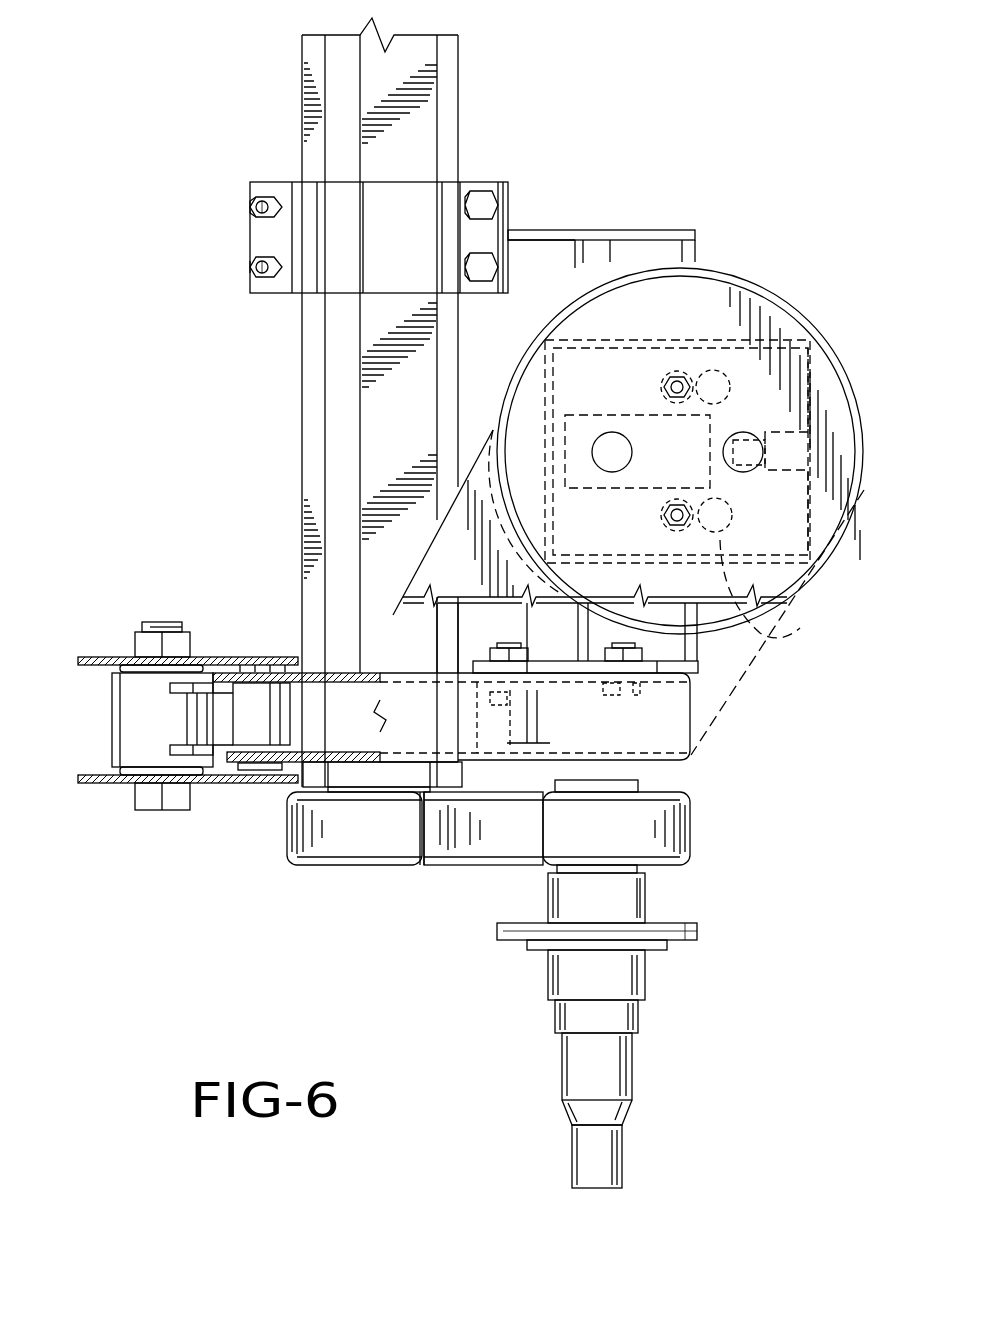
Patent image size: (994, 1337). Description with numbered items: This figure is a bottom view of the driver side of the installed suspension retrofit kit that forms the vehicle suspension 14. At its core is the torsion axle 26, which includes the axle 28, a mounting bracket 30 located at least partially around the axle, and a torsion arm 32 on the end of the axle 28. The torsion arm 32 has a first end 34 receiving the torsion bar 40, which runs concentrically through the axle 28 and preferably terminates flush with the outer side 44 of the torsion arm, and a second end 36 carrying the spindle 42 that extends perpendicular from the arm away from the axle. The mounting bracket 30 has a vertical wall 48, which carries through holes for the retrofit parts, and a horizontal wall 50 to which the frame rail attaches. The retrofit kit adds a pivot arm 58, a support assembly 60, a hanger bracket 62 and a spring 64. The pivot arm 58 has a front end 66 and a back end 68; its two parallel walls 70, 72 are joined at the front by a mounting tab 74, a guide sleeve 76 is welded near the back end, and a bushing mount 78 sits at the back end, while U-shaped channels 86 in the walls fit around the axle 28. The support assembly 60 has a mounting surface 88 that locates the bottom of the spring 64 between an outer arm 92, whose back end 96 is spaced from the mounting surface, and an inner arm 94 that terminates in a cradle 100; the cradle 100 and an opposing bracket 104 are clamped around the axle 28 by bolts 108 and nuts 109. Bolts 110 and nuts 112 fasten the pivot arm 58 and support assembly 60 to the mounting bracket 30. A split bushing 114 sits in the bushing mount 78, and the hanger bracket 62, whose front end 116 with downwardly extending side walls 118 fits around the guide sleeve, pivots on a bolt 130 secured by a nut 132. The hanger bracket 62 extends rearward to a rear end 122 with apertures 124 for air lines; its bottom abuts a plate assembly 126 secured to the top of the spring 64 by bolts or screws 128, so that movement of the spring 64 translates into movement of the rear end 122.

The vehicle suspension 14 is at (237, 937).
The torsion axle 26 is at (300, 83).
The axle 28 is at (335, 425).
The mounting bracket 30 is at (692, 762).
The torsion arm 32 is at (337, 868).
The first end 34 is at (275, 838).
The second end 36 is at (692, 828).
The torsion bar 40 is at (395, 790).
The spindle 42 is at (578, 1070).
The outer side 44 is at (403, 863).
The vertical wall 48 is at (413, 677).
The horizontal wall 50 is at (663, 732).
The pivot arm 58 is at (487, 757).
The support assembly 60 is at (704, 247).
The hanger bracket 62 is at (782, 303).
The spring 64 is at (748, 275).
The front end 66 is at (582, 772).
The back end 68 is at (170, 690).
The parallel wall 70 is at (348, 765).
The parallel wall 72 is at (350, 672).
The mounting tab 74 is at (505, 722).
The guide sleeve 76 is at (245, 705).
The bushing mount 78 is at (136, 722).
The U-shaped channel 86 is at (314, 688).
The mounting surface 88 is at (648, 252).
The outer arm 92 is at (667, 667).
The inner arm 94 is at (543, 240).
The back end 96 is at (483, 668).
The cradle 100 is at (512, 207).
The bracket 104 is at (345, 268).
The bolt 108 is at (256, 207).
The nut 109 is at (268, 195).
The bolt 110 is at (247, 770).
The nut 112 is at (270, 658).
The bushing 114 is at (148, 767).
The front end 116 is at (78, 778).
The side wall 118 is at (118, 657).
The rear end 122 is at (822, 377).
The aperture 124 is at (612, 458).
The plate assembly 126 is at (770, 640).
The bolt or screw 128 is at (660, 386).
The bolt 130 is at (175, 800).
The nut 132 is at (135, 640).